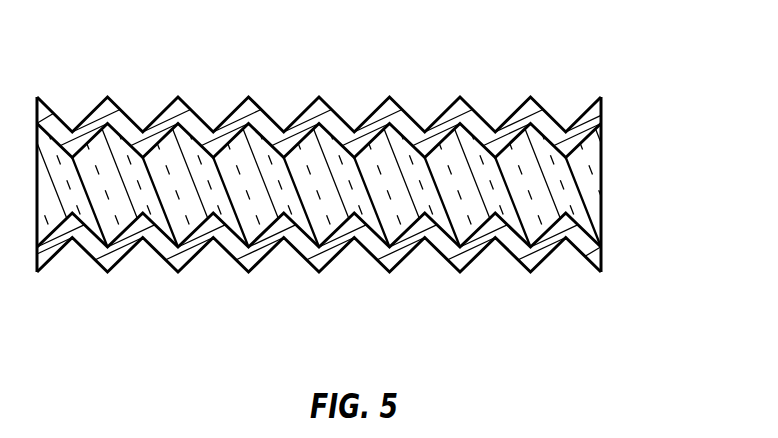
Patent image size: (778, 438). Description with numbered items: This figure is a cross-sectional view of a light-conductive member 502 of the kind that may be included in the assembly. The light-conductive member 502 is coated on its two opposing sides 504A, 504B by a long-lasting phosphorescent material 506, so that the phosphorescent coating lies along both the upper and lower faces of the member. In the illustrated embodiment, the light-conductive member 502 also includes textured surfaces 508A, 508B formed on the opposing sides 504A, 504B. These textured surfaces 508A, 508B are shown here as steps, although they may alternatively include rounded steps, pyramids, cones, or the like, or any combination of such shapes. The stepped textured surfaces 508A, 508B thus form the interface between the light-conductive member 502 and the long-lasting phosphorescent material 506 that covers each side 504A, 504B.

The light-conductive member 502 is at (563, 179).
The side 504A is at (630, 130).
The side 504B is at (630, 233).
The long-lasting phosphorescent material 506 is at (443, 115).
The textured surface 508A is at (502, 126).
The textured surface 508B is at (441, 247).